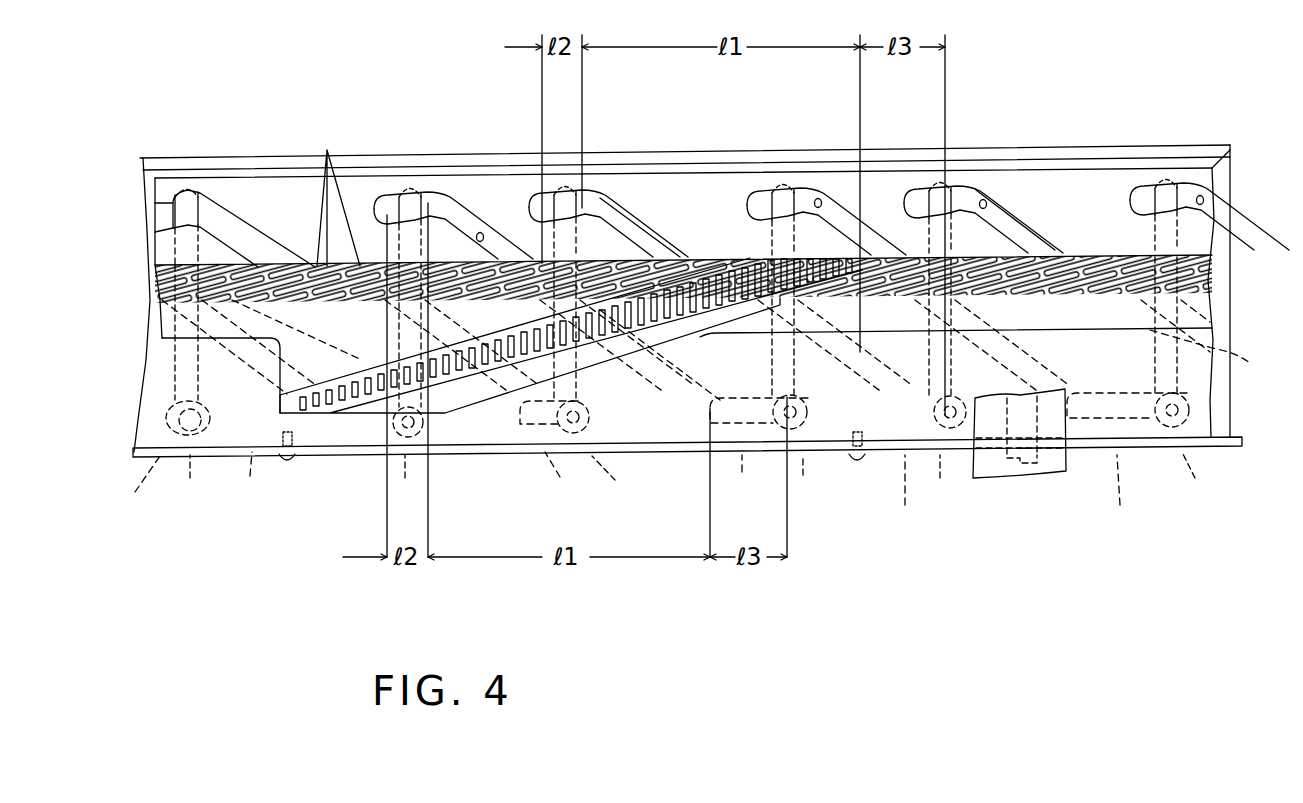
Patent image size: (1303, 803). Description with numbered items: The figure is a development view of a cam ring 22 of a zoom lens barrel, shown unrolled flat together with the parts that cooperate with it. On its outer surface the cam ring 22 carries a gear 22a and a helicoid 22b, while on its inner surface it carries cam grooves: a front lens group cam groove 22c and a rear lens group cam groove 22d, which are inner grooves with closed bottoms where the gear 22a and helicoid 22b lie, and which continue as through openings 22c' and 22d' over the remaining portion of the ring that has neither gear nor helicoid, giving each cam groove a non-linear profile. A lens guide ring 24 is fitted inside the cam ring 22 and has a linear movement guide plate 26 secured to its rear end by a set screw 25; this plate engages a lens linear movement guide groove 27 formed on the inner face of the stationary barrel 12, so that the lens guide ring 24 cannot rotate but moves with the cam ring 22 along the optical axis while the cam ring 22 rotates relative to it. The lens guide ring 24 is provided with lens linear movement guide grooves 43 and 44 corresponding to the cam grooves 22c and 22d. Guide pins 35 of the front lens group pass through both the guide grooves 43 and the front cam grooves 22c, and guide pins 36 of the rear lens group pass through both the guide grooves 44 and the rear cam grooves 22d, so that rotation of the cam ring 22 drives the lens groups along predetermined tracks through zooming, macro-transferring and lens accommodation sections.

The stationary barrel 12 is at (1053, 472).
The cam ring 22 is at (698, 190).
The gear 22a is at (335, 190).
The helicoid 22b is at (452, 414).
The front lens group cam groove 22c is at (696, 419).
The through opening 22c' is at (833, 186).
The rear lens group cam groove 22d is at (674, 438).
The through opening 22d' is at (858, 177).
The lens guide ring 24 is at (1218, 228).
The set screw 25 is at (291, 458).
The linear movement guide plate 26 is at (1162, 447).
The lens linear movement guide groove 27 is at (1025, 472).
The guide pin 35 is at (677, 449).
The guide pin 36 is at (697, 381).
The lens linear movement guide groove 43 is at (188, 200).
The lens linear movement guide groove 44 is at (405, 190).